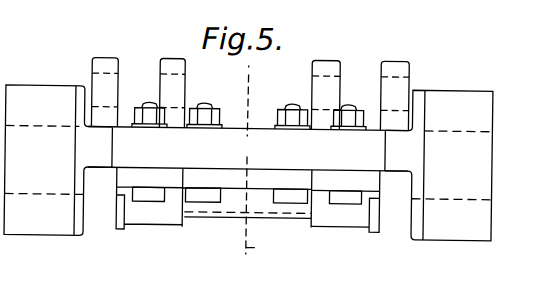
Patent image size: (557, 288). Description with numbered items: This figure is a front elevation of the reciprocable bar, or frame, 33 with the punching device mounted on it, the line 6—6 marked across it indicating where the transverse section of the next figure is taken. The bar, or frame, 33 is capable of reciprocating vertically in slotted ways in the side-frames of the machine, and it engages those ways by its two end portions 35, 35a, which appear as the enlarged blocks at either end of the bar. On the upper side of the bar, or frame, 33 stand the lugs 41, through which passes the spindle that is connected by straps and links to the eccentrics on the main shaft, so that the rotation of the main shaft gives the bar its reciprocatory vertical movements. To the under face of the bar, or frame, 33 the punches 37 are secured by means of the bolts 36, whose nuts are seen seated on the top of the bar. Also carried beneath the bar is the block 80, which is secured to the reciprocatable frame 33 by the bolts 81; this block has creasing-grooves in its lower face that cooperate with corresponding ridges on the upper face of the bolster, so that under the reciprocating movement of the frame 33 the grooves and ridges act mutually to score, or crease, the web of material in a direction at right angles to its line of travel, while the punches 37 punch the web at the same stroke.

The section line 6— 6 is at (257, 160).
The bar, or frame 33 is at (248, 149).
The end portion 35 is at (438, 165).
The end portion 35a is at (58, 160).
The bolts 36 is at (155, 106).
The punches 37 is at (160, 213).
The lugs 41 is at (102, 69).
The block 80 is at (247, 198).
The bolts 81 is at (284, 108).